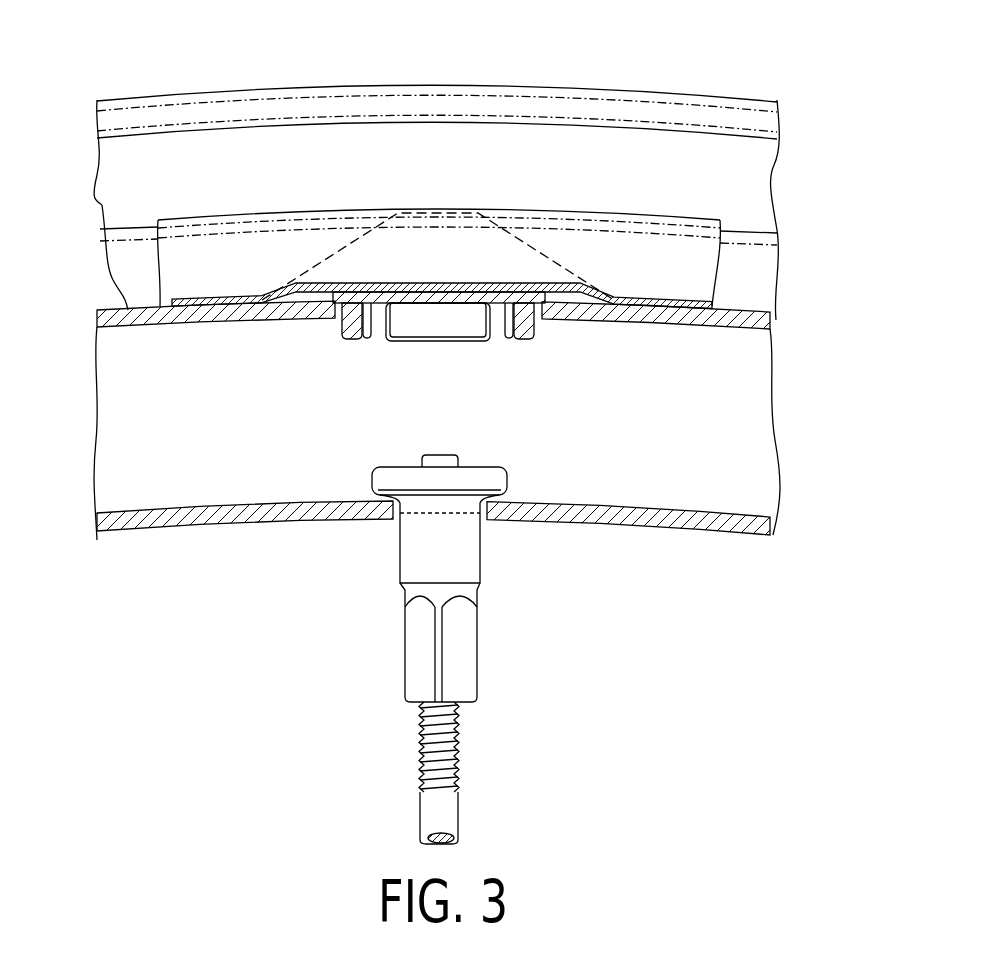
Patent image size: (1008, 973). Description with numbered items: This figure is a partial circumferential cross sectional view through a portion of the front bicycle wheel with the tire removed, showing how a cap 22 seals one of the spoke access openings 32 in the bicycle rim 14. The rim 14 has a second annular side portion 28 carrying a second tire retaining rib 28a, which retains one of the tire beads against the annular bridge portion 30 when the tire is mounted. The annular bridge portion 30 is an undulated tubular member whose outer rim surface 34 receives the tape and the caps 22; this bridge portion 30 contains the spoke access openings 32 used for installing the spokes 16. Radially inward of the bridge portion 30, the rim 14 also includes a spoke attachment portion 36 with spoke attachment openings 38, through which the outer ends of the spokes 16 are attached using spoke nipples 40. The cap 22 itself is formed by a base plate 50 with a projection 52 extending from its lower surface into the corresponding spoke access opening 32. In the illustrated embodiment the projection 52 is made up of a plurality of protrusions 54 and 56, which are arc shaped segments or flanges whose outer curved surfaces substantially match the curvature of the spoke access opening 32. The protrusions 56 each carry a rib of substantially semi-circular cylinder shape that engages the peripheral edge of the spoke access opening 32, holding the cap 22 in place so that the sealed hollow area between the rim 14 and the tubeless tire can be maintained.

The bicycle rim 14 is at (780, 163).
The second tire retaining rib 28a is at (647, 108).
The cap 22 is at (649, 210).
The outer rim surface 34 is at (128, 308).
The annular bridge portion 30 is at (146, 338).
The projection 52 is at (334, 331).
The base plate 50 is at (441, 283).
The protrusion 54 is at (348, 342).
The spoke access opening 32 is at (366, 340).
The protrusion 56 is at (466, 343).
The second annular side portion 28 is at (718, 407).
The spoke attachment portion 36 is at (679, 538).
The spoke attachment opening 38 is at (478, 505).
The spoke nipple 40 is at (477, 693).
The spoke 16 is at (410, 793).